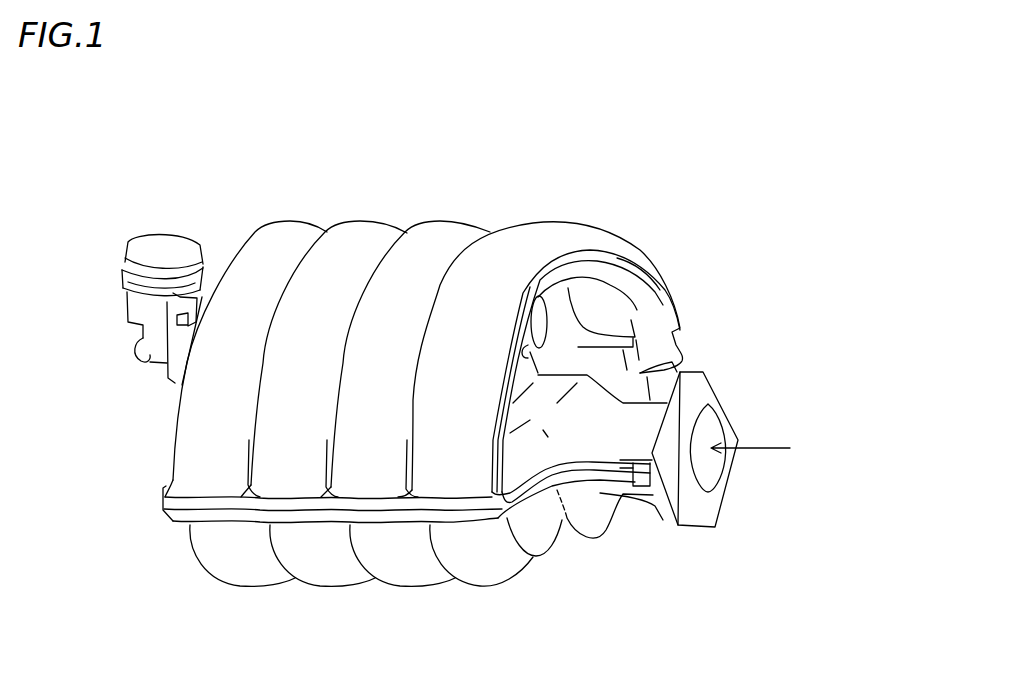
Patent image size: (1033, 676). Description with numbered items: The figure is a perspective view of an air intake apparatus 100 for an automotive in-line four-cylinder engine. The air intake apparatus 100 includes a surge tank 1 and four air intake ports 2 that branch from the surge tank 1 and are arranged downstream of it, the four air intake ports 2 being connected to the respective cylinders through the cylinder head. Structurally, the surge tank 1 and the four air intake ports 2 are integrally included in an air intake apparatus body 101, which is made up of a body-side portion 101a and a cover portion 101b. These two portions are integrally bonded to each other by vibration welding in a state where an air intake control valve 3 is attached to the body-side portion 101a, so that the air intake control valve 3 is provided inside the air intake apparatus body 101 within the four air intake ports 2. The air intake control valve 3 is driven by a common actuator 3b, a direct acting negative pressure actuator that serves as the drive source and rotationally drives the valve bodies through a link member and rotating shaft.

The air intake apparatus 100 is at (685, 230).
The air intake apparatus body 101 is at (557, 232).
The body-side portion 101a is at (525, 572).
The cover portion 101b is at (462, 230).
The surge tank 1 is at (600, 503).
The air intake ports 2 is at (255, 576).
The air intake control valve 3 is at (106, 299).
The actuator 3b is at (164, 222).